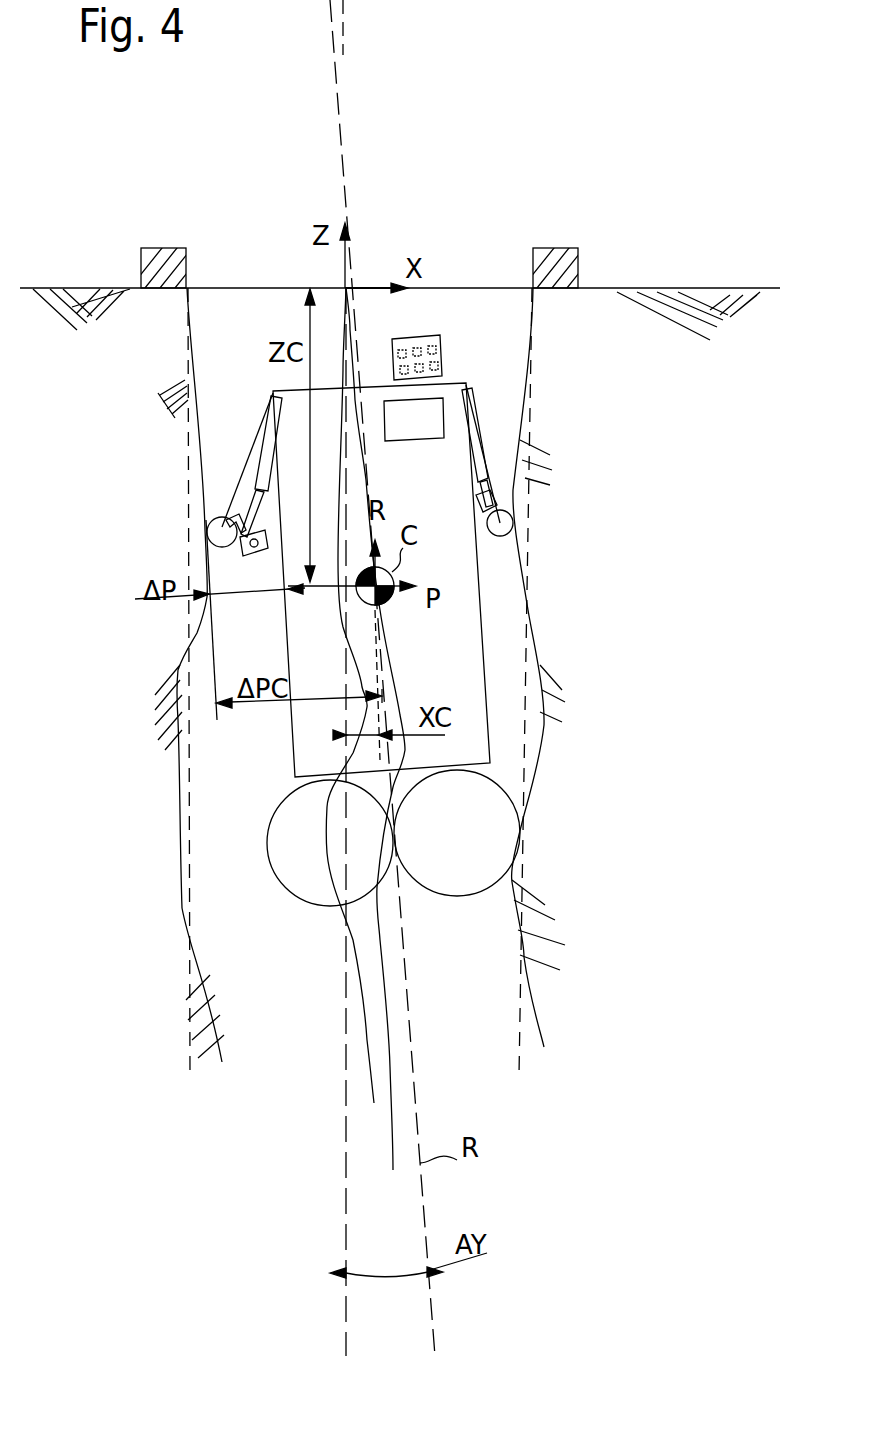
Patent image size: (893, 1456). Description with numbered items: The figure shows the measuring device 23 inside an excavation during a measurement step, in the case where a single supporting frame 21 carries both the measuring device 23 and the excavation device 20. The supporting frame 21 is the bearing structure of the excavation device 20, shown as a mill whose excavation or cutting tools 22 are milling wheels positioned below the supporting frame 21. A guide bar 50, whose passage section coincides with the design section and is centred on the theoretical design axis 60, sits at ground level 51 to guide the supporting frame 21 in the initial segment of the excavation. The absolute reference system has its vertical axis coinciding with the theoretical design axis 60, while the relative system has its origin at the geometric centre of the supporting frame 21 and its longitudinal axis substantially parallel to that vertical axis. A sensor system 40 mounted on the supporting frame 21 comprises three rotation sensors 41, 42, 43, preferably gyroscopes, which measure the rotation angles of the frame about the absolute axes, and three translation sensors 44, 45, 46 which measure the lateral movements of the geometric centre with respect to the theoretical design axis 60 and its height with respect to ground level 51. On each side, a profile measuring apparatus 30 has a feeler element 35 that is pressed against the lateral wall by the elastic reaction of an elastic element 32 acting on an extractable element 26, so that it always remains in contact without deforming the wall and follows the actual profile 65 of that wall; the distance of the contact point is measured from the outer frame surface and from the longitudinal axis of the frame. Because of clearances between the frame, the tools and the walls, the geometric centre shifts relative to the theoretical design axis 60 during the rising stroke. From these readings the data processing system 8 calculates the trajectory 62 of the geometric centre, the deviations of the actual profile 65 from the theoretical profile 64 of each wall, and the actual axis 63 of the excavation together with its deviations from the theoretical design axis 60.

The data processing system 8 is at (410, 440).
The excavation device 20 is at (375, 675).
The supporting frame 21 is at (295, 740).
The excavation or cutting tools 22 is at (300, 903).
The measuring device 23 is at (519, 564).
The extractable element 26 is at (233, 505).
The profile measuring apparatus 30 is at (192, 465).
The elastic element 32 is at (272, 452).
The feeler element 35 is at (220, 521).
The sensor system 40 is at (432, 347).
The rotation sensor 41 is at (398, 350).
The rotation sensor 42 is at (410, 348).
The rotation sensor 43 is at (428, 346).
The translation sensor 44 is at (400, 368).
The translation sensor 45 is at (412, 372).
The translation sensor 46 is at (438, 366).
The guide bar 50 is at (580, 248).
The ground level 51 is at (698, 288).
The theoretical design axis 60 is at (347, 1163).
The trajectory 62 is at (389, 1110).
The actual axis 63 is at (370, 1077).
The theoretical profile 64 is at (188, 552).
The actual profile 65 is at (190, 805).